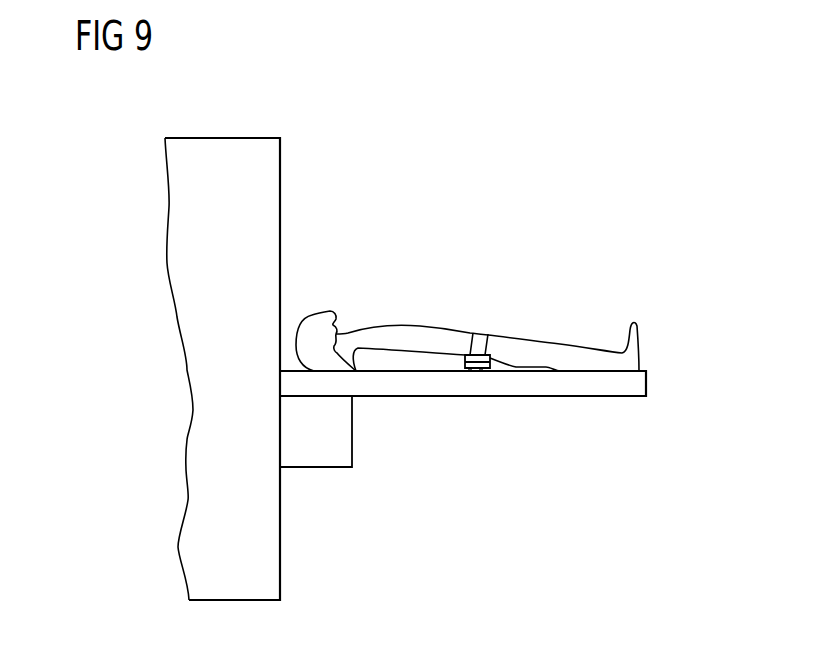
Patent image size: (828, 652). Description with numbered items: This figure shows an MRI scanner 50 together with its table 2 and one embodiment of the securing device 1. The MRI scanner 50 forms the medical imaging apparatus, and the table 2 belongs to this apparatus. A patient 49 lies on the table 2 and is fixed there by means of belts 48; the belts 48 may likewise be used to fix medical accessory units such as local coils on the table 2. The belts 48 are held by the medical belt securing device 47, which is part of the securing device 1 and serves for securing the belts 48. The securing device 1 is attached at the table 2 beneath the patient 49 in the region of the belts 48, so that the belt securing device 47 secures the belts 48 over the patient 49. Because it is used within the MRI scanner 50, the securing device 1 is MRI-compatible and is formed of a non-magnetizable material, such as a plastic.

The MRI scanner 50 is at (219, 138).
The table 2 is at (647, 381).
The patient 49 is at (580, 355).
The belt 48 is at (476, 341).
The securing device 1 is at (470, 369).
The medical belt securing device 47 is at (481, 369).